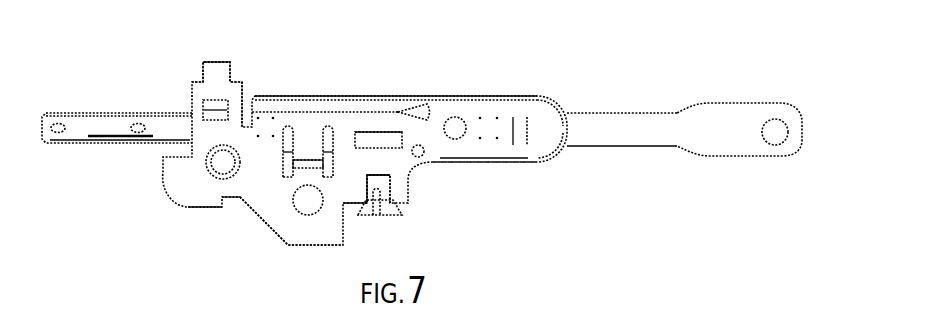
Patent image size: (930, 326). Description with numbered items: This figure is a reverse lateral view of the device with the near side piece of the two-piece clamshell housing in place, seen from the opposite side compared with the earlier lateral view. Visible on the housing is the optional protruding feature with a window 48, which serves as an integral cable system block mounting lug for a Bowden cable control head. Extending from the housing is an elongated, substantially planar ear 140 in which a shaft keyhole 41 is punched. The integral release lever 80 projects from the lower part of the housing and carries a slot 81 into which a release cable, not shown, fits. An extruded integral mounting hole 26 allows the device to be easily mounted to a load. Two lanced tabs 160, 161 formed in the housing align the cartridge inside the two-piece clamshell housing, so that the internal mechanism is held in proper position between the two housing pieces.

The protruding feature with a window 48 is at (218, 62).
The lanced tab 160 is at (313, 155).
The lanced tab 161 is at (520, 117).
The extruded integral mounting hole 26 is at (220, 164).
The elongated substantially planar ear 140 is at (265, 207).
The shaft keyhole 41 is at (308, 200).
The integral release lever 80 is at (398, 212).
The slot 81 is at (380, 210).